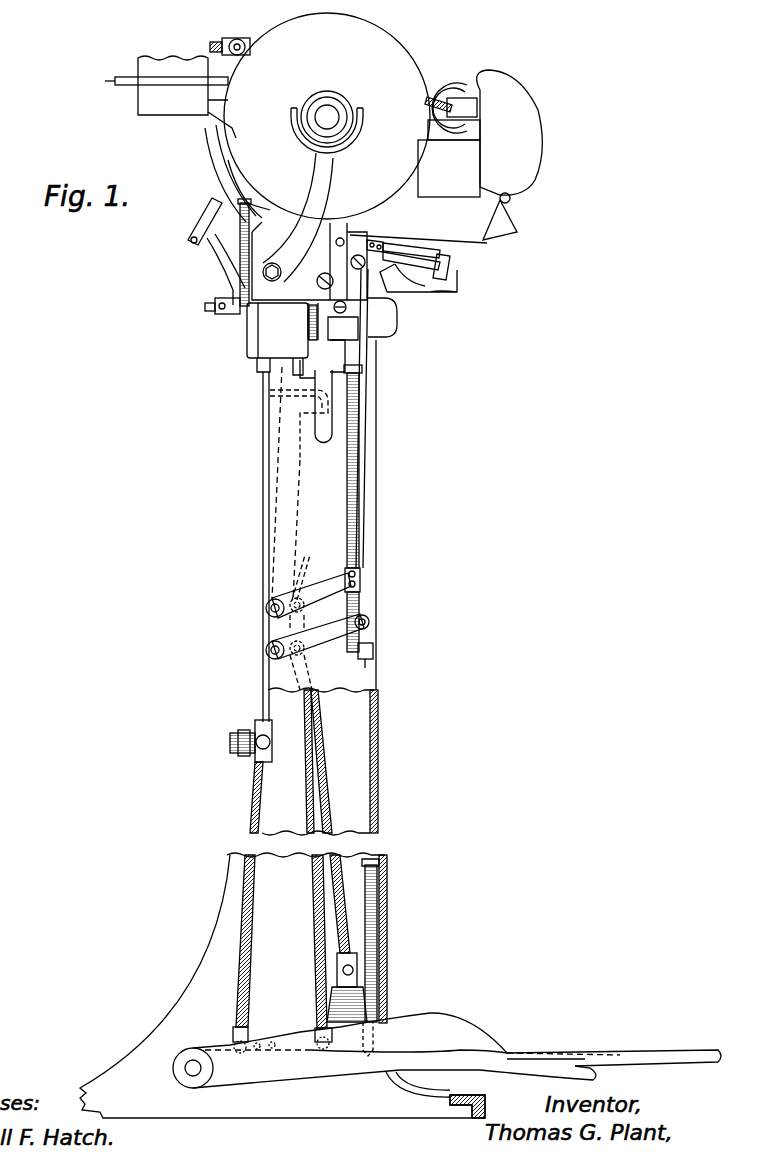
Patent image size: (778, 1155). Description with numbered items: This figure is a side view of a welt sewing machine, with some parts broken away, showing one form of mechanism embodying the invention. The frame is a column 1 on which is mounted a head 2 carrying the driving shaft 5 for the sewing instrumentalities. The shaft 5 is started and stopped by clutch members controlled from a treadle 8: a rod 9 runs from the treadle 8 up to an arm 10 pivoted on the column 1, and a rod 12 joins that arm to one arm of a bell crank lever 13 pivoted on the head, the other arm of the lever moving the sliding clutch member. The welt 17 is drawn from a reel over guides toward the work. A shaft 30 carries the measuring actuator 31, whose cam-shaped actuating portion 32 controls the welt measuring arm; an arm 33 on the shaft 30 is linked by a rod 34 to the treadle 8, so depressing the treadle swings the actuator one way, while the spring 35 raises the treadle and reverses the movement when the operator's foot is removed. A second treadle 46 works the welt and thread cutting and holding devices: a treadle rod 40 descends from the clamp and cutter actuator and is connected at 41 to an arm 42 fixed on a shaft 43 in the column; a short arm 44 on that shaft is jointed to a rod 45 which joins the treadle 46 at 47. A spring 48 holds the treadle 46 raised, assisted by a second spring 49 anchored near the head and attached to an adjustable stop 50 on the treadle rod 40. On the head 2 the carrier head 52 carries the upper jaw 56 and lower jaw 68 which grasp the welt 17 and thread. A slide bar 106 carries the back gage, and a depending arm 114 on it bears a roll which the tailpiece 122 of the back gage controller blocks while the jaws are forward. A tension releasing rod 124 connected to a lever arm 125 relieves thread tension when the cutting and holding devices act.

The column 1 is at (380, 745).
The head 2 is at (383, 312).
The shaft 5 is at (330, 113).
The treadle 8 is at (437, 1063).
The rod 9 is at (248, 893).
The arm 10 is at (240, 730).
The rod 12 is at (260, 436).
The bell crank lever 13 is at (327, 184).
The welt 17 is at (458, 271).
The shaft 30 is at (266, 606).
The measuring actuator 31 is at (288, 495).
The actuating portion 32 is at (270, 393).
The arm 33 is at (296, 568).
The rod 34 is at (310, 921).
The spring 35 is at (375, 930).
The treadle rod 40 is at (380, 342).
The connection 41 is at (368, 616).
The arm 42 is at (328, 640).
The shaft 43 is at (266, 652).
The short arm 44 is at (288, 636).
The rod 45 is at (318, 770).
The treadle 46 is at (445, 1003).
The connection 47 is at (356, 968).
The spring 48 is at (364, 990).
The spring 49 is at (362, 450).
The adjustable stop 50 is at (373, 650).
The head 52 is at (214, 305).
The upper jaw 56 is at (410, 242).
The lower jaw 68 is at (418, 284).
The bar 106 is at (222, 202).
The arm 114 is at (205, 213).
The tailpiece 122 is at (216, 260).
The tension releasing rod 124 is at (433, 92).
The lever arm 125 is at (232, 58).